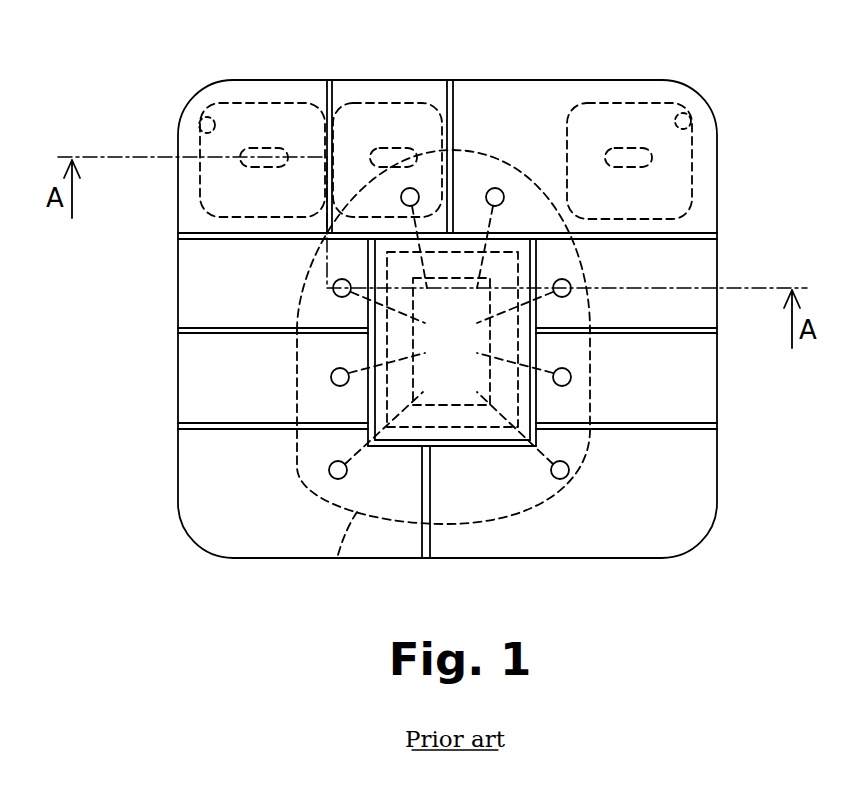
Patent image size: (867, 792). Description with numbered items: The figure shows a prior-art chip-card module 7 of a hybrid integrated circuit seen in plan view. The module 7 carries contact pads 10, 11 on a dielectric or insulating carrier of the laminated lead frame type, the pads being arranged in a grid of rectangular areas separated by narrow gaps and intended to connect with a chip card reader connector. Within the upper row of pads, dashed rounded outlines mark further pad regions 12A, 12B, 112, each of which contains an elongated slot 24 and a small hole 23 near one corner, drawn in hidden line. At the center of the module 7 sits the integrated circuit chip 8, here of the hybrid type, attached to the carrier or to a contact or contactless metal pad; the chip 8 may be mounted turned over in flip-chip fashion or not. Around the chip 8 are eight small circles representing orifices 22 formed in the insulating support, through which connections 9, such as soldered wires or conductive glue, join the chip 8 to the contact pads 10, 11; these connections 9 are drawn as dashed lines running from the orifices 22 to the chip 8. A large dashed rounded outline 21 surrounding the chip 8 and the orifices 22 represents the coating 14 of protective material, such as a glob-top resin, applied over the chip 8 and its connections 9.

The chip-card module 7 is at (216, 572).
The integrated circuit chip 8 is at (428, 412).
The connections 9 is at (419, 200).
The contact pads 10 is at (198, 297).
The contact pads 11 is at (330, 92).
The ISO contact 12A is at (245, 118).
The ISO contact 12B is at (647, 117).
The ISO contact 112 is at (388, 88).
The coating 14 is at (338, 555).
The encapsulation resin 21 is at (480, 428).
The orifices 22 is at (504, 197).
The holes 23 is at (206, 119).
The slots 24 is at (288, 152).